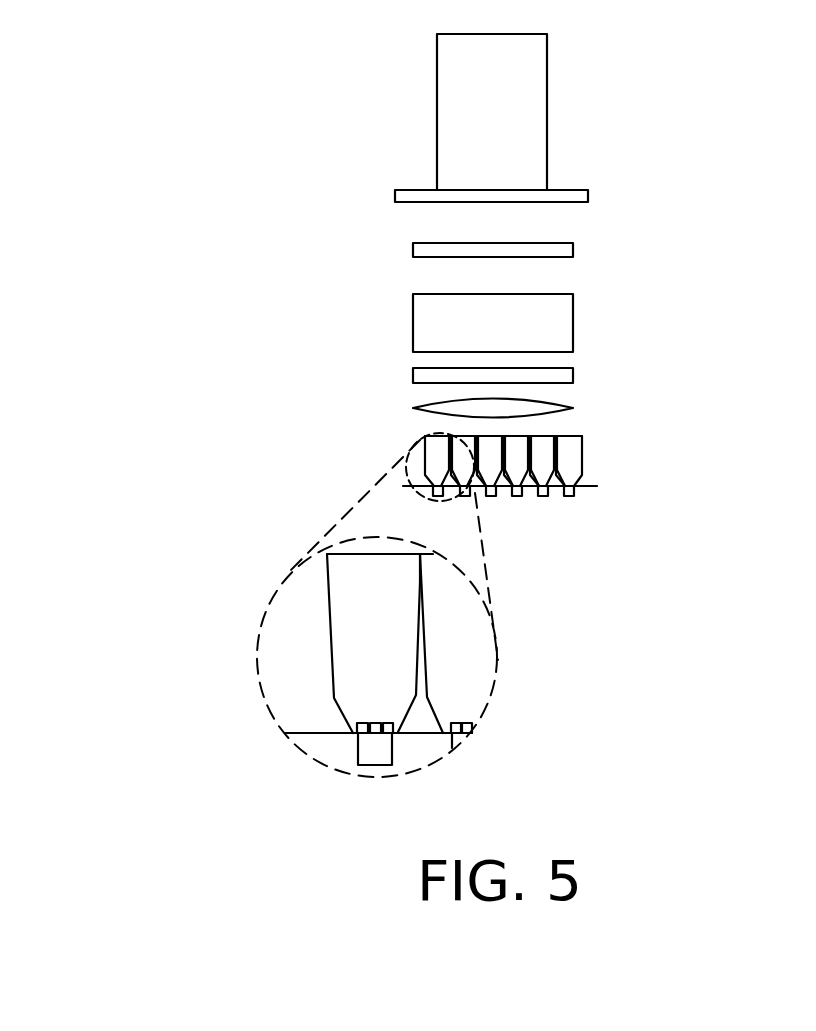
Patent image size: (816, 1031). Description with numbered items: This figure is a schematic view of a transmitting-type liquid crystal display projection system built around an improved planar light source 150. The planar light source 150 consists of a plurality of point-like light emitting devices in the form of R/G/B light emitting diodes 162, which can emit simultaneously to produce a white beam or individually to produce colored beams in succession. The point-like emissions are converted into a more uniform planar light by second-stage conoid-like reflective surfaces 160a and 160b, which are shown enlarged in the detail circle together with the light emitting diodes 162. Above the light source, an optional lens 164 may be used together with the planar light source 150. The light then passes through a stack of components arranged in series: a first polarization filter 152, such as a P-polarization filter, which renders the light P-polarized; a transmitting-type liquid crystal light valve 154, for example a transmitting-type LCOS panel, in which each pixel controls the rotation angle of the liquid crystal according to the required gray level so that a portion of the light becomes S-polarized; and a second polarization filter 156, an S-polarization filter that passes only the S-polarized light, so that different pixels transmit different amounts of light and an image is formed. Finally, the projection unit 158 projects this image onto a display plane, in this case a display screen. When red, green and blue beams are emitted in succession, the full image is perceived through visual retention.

The projection unit 158 is at (547, 117).
The second polarization filter 156 is at (573, 250).
The transmitting-type liquid crystal light valve 154 is at (573, 320).
The first polarization filter 152 is at (573, 373).
The lens 164 is at (573, 406).
The planar light source 150 is at (583, 453).
The second-stage conoid-like reflective surface 160a is at (408, 717).
The second-stage conoid-like reflective surface 160b is at (419, 633).
The R/G/B light emitting diodes 162 is at (352, 730).